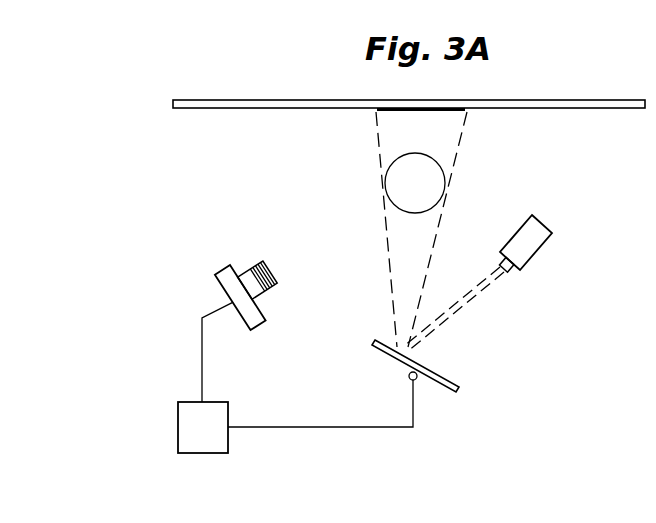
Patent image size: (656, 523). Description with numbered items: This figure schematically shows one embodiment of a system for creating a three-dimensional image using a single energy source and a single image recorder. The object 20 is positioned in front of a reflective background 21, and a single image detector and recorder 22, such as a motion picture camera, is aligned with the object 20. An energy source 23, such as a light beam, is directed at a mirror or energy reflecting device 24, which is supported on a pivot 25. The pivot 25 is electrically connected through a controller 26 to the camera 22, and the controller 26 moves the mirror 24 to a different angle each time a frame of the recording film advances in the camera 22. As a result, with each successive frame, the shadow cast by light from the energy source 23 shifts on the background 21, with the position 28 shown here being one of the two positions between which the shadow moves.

The object 20 is at (427, 197).
The reflective background 21 is at (587, 109).
The image detector and recorder 22 is at (217, 275).
The energy source 23 is at (540, 248).
The mirror 24 is at (435, 355).
The pivot 25 is at (417, 379).
The controller 26 is at (178, 422).
The shadow position 28 is at (455, 111).